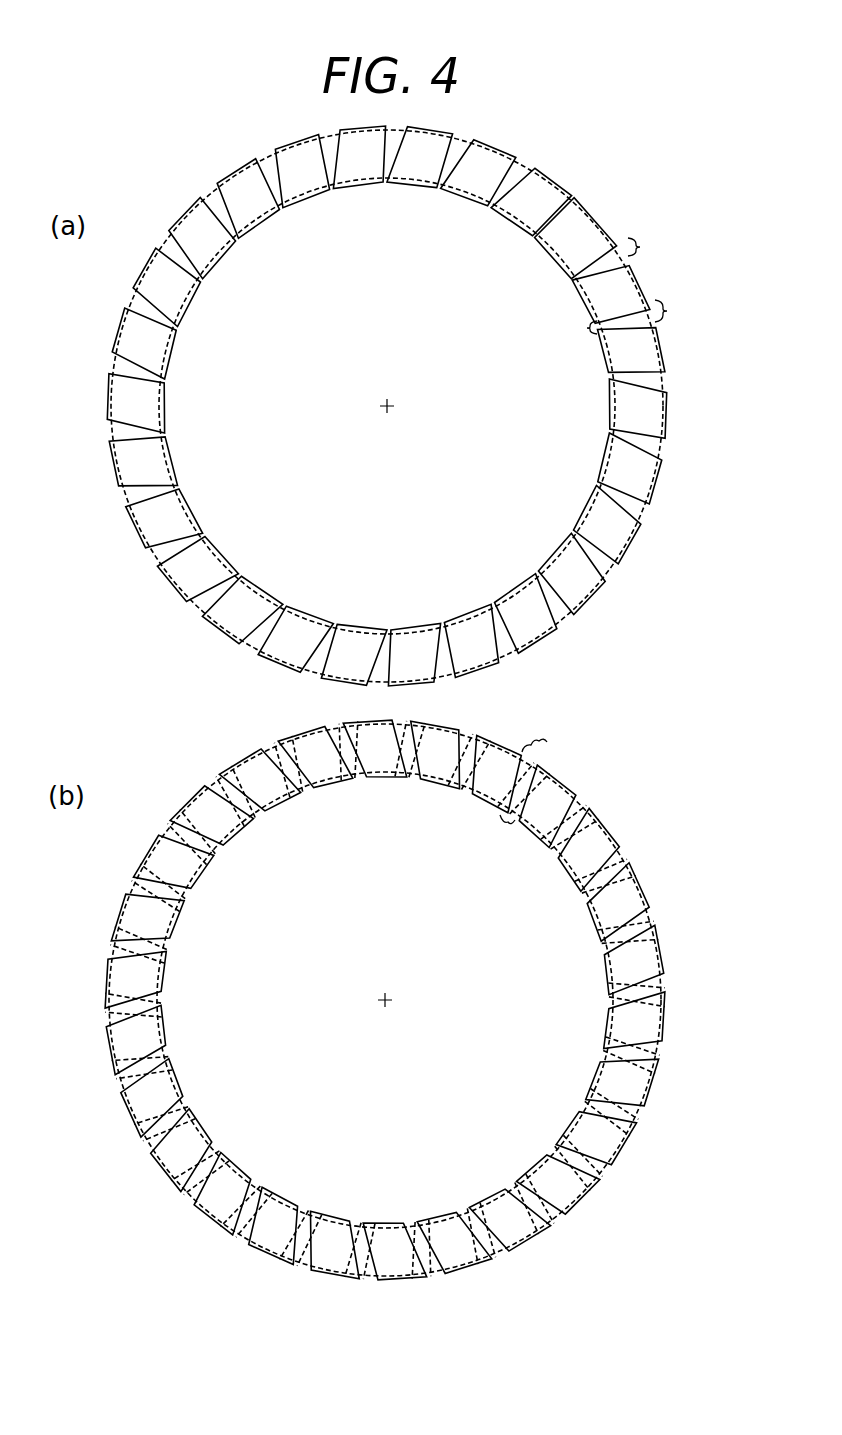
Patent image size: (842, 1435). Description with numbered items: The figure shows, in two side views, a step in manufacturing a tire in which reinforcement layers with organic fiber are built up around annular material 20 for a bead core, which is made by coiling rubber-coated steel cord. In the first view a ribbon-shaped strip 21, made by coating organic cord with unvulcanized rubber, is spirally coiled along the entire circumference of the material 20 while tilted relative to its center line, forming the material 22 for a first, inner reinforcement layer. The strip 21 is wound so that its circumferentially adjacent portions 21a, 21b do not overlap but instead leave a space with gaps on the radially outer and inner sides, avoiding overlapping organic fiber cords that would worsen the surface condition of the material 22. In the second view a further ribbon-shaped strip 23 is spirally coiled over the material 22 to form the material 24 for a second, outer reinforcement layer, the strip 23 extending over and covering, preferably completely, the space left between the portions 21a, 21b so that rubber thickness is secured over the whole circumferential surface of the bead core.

The material for the bead core 20 is at (663, 379).
The ribbon-shaped strip 21 is at (426, 405).
The portion of the strip 21a is at (585, 233).
The portion of the strip 21b is at (612, 292).
The material for the first reinforcement layer 22 is at (424, 702).
The ribbon-shaped strip 23 is at (577, 791).
The material for the second reinforcement layer 24 is at (618, 838).